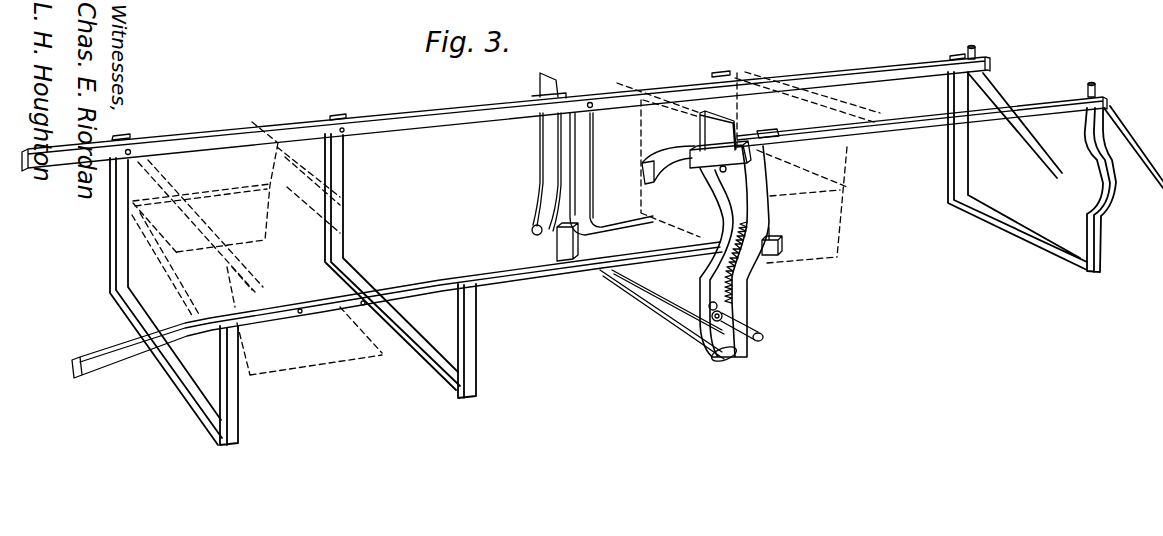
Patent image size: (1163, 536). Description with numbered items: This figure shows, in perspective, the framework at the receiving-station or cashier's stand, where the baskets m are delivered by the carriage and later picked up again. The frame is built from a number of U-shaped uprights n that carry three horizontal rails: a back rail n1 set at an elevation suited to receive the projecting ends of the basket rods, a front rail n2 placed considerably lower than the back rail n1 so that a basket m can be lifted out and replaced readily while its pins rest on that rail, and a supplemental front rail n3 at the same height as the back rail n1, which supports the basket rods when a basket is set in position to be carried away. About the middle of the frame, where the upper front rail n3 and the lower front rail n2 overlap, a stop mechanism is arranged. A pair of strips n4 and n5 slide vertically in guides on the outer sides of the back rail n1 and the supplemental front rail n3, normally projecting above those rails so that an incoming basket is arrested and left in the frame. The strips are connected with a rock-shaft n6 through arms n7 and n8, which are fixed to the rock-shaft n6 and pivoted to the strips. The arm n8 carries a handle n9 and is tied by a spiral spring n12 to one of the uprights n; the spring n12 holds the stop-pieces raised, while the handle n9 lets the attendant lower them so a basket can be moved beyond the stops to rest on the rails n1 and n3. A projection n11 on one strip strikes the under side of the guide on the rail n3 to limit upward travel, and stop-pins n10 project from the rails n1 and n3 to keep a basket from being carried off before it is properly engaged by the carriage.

The U-shaped uprights n is at (357, 185).
The back rail n1 is at (423, 110).
The front rail n2 is at (455, 279).
The supplemental front rail n3 is at (913, 118).
The stop-piece strip n4 is at (548, 79).
The stop-piece strip n5 is at (737, 124).
The rock-shaft n6 is at (648, 302).
The arm n7 is at (550, 235).
The arm n8 is at (740, 355).
The handle n9 is at (748, 323).
The stop-pins n10 is at (977, 39).
The projection n11 is at (723, 171).
The spiral spring n12 is at (735, 279).
The basket m is at (506, 233).